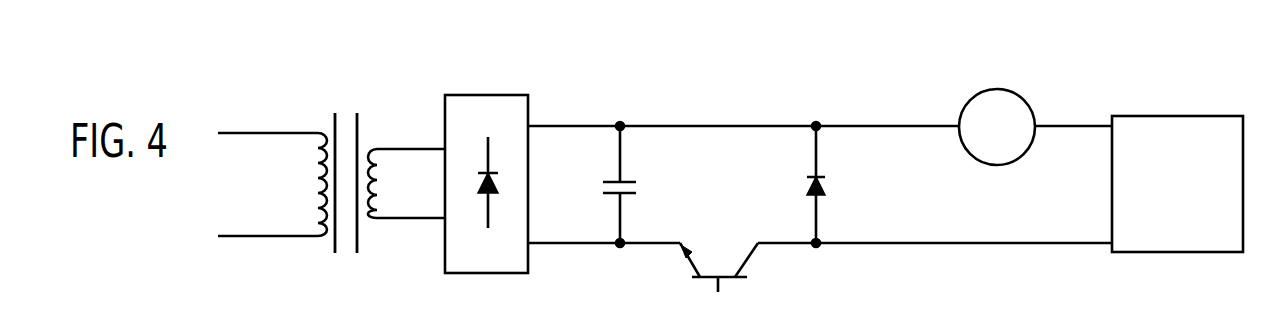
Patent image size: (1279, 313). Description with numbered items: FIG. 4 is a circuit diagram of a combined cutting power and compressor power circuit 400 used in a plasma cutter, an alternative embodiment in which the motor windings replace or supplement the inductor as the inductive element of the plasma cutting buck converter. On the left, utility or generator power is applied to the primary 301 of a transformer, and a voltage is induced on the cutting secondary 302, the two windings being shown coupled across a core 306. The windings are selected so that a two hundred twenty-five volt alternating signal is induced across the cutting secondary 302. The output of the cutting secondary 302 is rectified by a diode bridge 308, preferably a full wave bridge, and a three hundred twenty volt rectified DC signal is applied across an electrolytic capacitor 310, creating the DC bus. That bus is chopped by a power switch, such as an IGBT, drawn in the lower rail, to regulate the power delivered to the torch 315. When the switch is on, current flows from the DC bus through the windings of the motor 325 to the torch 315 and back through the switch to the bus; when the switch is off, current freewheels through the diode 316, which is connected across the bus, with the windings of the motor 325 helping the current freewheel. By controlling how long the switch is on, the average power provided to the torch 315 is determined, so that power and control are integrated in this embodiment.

The power supply circuit 400 is at (826, 81).
The primary 301 is at (322, 173).
The cutting secondary 302 is at (372, 180).
The transformer core 306 is at (345, 115).
The diode bridge 308 is at (488, 95).
The electrolytic capacitor 310 is at (637, 189).
The diode 316 is at (826, 190).
The motor 325 is at (1000, 89).
The torch 315 is at (1180, 116).